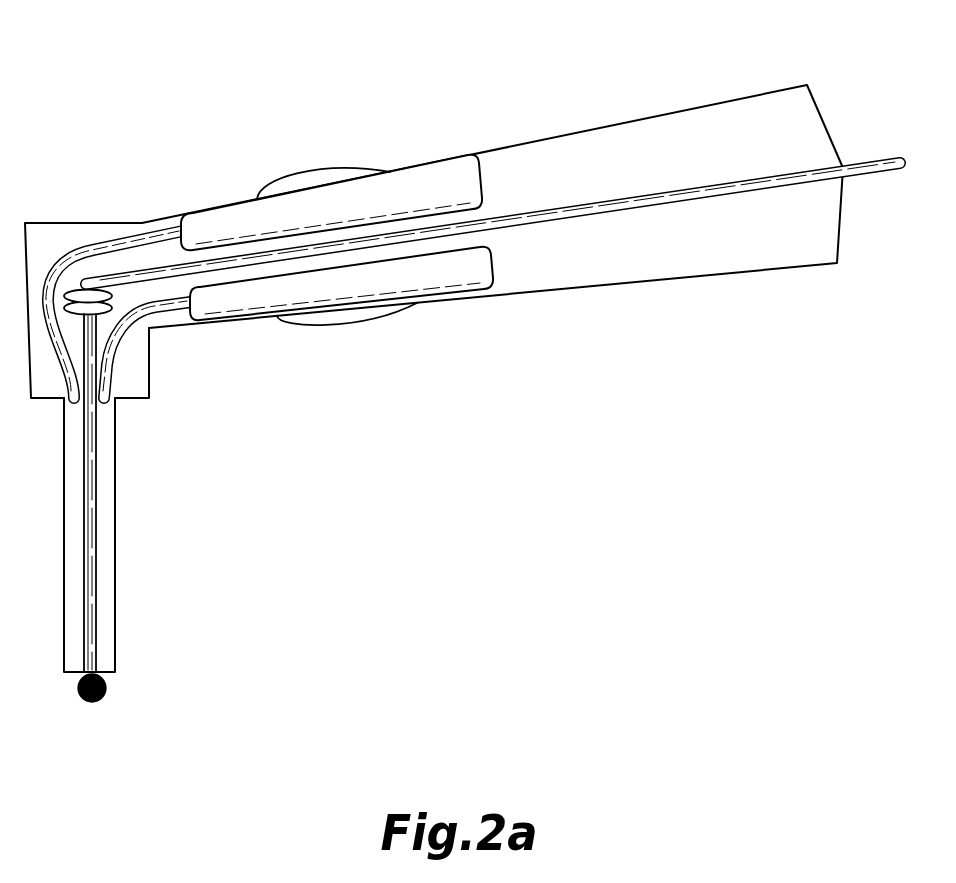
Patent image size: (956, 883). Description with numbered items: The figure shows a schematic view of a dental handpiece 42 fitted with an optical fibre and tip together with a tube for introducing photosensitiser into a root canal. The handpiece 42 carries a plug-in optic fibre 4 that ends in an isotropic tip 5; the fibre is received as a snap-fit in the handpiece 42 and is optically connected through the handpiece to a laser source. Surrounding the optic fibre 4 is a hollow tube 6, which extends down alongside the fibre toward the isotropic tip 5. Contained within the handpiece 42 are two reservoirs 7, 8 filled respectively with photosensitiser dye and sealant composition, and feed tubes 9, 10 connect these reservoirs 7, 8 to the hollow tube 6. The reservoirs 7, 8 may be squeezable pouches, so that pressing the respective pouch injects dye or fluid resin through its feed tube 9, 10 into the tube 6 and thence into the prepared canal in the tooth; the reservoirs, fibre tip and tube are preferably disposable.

The handpiece 42 is at (678, 108).
The reservoir 7 is at (430, 178).
The reservoir 8 is at (449, 281).
The feed tube 9 is at (77, 250).
The feed tube 10 is at (126, 324).
The optic fibre 4 is at (112, 585).
The hollow tube 6 is at (72, 502).
The isotropic tip 5 is at (84, 701).